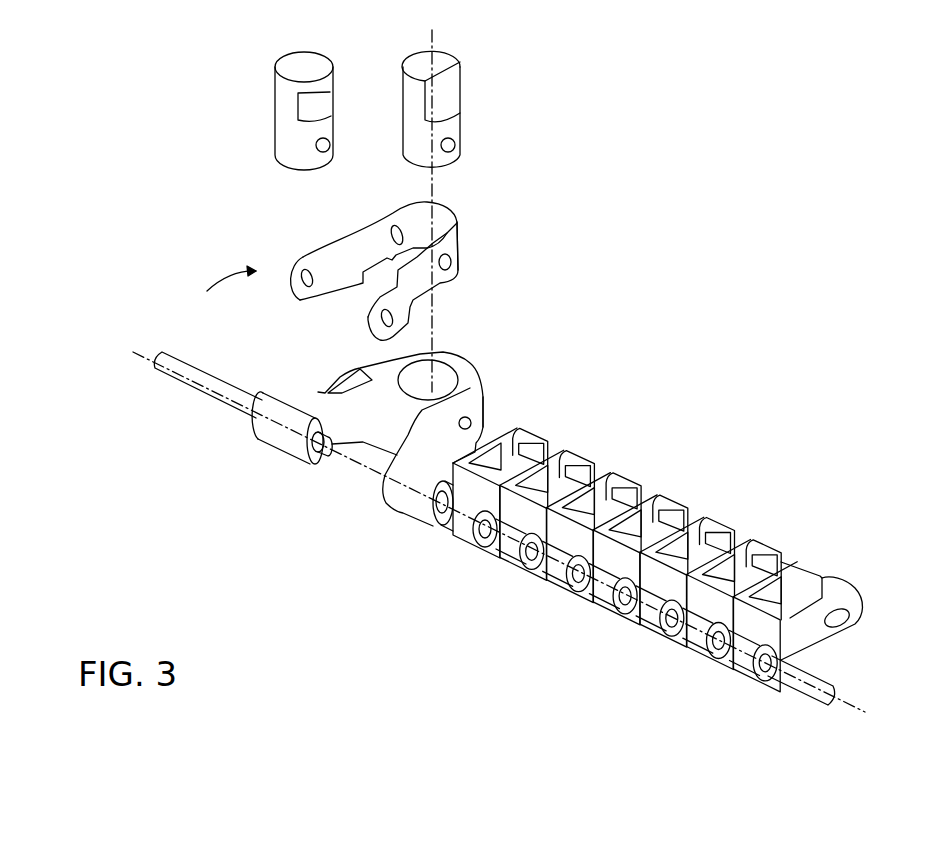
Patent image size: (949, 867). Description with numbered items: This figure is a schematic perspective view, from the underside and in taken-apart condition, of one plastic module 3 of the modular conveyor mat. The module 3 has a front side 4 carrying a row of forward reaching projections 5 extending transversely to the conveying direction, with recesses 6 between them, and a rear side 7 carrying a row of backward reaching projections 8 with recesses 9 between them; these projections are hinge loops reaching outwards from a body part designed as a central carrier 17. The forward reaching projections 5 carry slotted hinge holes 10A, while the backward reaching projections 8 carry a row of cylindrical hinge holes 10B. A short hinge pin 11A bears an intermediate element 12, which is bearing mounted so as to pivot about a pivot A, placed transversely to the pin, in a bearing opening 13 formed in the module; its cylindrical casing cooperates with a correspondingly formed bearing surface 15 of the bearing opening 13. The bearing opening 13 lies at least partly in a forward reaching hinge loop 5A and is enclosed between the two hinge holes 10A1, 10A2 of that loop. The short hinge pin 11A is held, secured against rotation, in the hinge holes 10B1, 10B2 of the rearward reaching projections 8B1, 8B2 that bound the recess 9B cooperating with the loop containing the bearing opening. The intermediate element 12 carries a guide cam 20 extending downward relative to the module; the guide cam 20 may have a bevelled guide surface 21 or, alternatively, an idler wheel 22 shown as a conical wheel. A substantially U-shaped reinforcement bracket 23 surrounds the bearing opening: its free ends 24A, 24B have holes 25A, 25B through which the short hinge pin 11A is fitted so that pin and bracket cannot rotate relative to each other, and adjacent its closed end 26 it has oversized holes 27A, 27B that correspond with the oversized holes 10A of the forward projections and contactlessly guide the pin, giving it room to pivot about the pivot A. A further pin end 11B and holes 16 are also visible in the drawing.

The plastic module 3 is at (625, 564).
The front side 4 is at (674, 495).
The forward reaching projections 5 is at (697, 500).
The recesses 6 is at (576, 491).
The rear side 7 is at (597, 553).
The backward reaching projections 8 is at (468, 548).
The recesses 9 is at (538, 573).
The pivot A is at (438, 48).
The intermediate element 12 is at (460, 118).
The bearing opening 13 is at (410, 391).
The bearing surface 15 is at (378, 272).
The hole 16 is at (330, 145).
The central carrier 17 is at (410, 418).
The guide cam 20 is at (293, 60).
The bevelled guide surface 21 is at (454, 90).
The idler wheel 22 is at (328, 97).
The reinforcement bracket 23 is at (220, 289).
The free end 24A is at (305, 258).
The free end 24B is at (380, 338).
The hole 25A is at (300, 297).
The hole 25B is at (385, 313).
The closed end 26 is at (462, 247).
The oversized hole 27A is at (450, 268).
The oversized hole 27B is at (395, 228).
The forward reaching hinge loop 5A is at (482, 372).
The rearward reaching projection 8B1 is at (263, 442).
The rearward reaching projection 8B2 is at (398, 507).
The recess 9B is at (383, 473).
The slotted hinge holes 10A is at (851, 614).
The hinge hole 10A1 is at (472, 423).
The hinge hole 10A2 is at (440, 352).
The cylindrical hinge holes 10B is at (750, 674).
The hinge hole 10B1 is at (323, 450).
The hinge hole 10B2 is at (442, 514).
The short hinge pin 11A is at (190, 395).
The second rod 11B is at (841, 690).